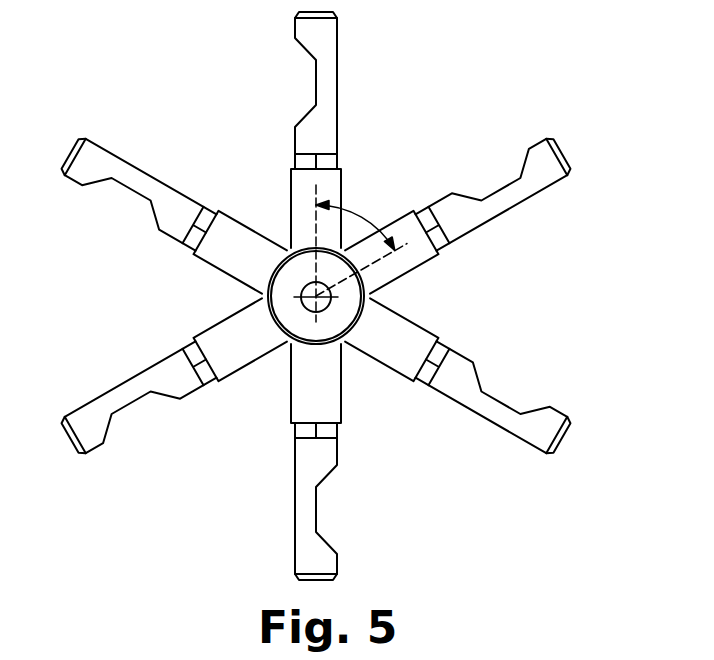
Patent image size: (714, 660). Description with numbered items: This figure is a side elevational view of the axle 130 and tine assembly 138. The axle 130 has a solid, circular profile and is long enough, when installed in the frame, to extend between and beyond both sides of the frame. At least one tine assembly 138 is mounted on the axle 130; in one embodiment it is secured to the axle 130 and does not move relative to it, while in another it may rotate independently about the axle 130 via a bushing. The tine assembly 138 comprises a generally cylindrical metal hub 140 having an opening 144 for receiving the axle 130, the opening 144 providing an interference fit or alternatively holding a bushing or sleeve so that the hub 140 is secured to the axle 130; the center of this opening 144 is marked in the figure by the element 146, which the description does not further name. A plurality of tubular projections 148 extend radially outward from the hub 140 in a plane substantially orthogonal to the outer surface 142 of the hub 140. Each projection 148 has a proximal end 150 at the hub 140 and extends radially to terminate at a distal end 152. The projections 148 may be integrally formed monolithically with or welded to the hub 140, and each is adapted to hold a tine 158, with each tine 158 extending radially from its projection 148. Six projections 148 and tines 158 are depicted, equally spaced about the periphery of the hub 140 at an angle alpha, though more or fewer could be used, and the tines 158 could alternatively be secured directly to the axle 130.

The axle 130 is at (365, 311).
The tine assembly 138 is at (355, 296).
The hub 140 is at (290, 324).
The outer surface 142 is at (303, 347).
The opening 144 is at (296, 278).
The axis 146 is at (301, 303).
The tubular projections 148 is at (404, 212).
The proximal end 150 is at (354, 366).
The distal end 152 is at (419, 405).
The tine 158 is at (338, 77).